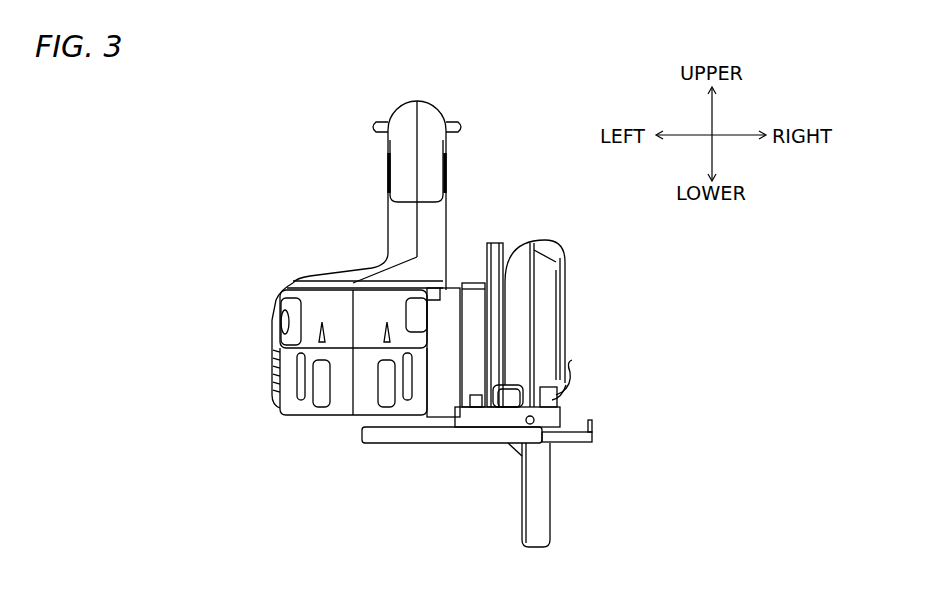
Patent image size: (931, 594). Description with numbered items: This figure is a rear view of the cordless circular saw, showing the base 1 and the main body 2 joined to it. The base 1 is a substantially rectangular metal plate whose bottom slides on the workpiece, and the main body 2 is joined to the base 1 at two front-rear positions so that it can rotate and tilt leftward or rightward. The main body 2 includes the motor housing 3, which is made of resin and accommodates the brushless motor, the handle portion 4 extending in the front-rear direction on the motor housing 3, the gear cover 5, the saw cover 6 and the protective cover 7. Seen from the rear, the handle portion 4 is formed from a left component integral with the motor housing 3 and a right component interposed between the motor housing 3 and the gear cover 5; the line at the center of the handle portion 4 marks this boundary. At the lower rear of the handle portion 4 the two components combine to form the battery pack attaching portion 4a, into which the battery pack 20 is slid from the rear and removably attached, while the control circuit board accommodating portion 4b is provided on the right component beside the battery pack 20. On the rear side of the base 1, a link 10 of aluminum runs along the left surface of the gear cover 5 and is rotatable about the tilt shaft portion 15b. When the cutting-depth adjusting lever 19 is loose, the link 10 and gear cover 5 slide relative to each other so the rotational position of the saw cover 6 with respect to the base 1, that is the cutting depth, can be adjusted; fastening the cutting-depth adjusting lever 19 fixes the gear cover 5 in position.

The base 1 is at (590, 446).
The main body 2 is at (383, 222).
The motor housing 3 is at (272, 363).
The handle portion 4 is at (428, 118).
The battery pack attaching portion 4a is at (295, 280).
The control circuit board accommodating portion 4b is at (436, 392).
The gear cover 5 is at (473, 283).
The saw cover 6 is at (541, 246).
The protective cover 7 is at (540, 530).
The link 10 is at (508, 243).
The tilt shaft portion 15b is at (552, 418).
The cutting-depth adjusting lever 19 is at (468, 395).
The battery pack 20 is at (338, 414).